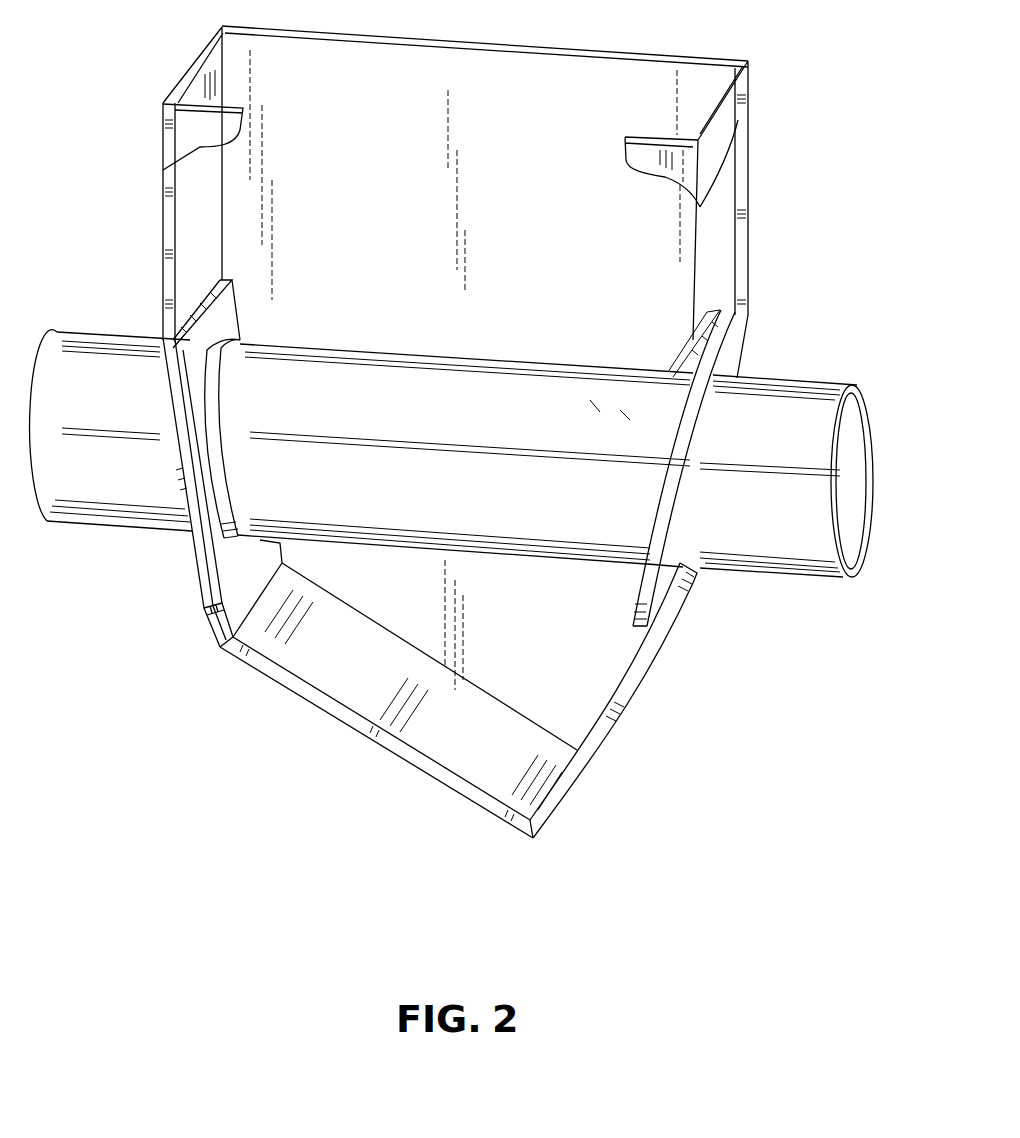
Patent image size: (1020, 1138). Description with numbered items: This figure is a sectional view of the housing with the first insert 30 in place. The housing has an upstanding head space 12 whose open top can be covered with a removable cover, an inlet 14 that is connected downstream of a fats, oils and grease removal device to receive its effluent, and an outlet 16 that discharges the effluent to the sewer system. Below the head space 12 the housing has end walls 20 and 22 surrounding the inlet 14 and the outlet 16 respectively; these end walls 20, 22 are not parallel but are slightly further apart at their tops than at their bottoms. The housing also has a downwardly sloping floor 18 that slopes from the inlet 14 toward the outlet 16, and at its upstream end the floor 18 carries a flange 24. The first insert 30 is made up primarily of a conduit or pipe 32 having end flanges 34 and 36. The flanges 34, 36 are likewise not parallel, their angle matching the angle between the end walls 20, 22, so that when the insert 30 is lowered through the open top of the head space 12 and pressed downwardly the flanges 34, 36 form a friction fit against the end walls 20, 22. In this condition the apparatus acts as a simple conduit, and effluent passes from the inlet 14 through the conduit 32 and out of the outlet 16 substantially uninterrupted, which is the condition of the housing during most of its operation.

The head space 12 is at (752, 108).
The inlet 14 is at (90, 337).
The outlet 16 is at (823, 382).
The floor 18 is at (427, 768).
The end wall 20 is at (197, 562).
The end wall 22 is at (697, 587).
The flange 24 is at (220, 612).
The first insert 30 is at (593, 407).
The conduit 32 is at (623, 415).
The end flange 34 is at (207, 332).
The end flange 36 is at (707, 367).